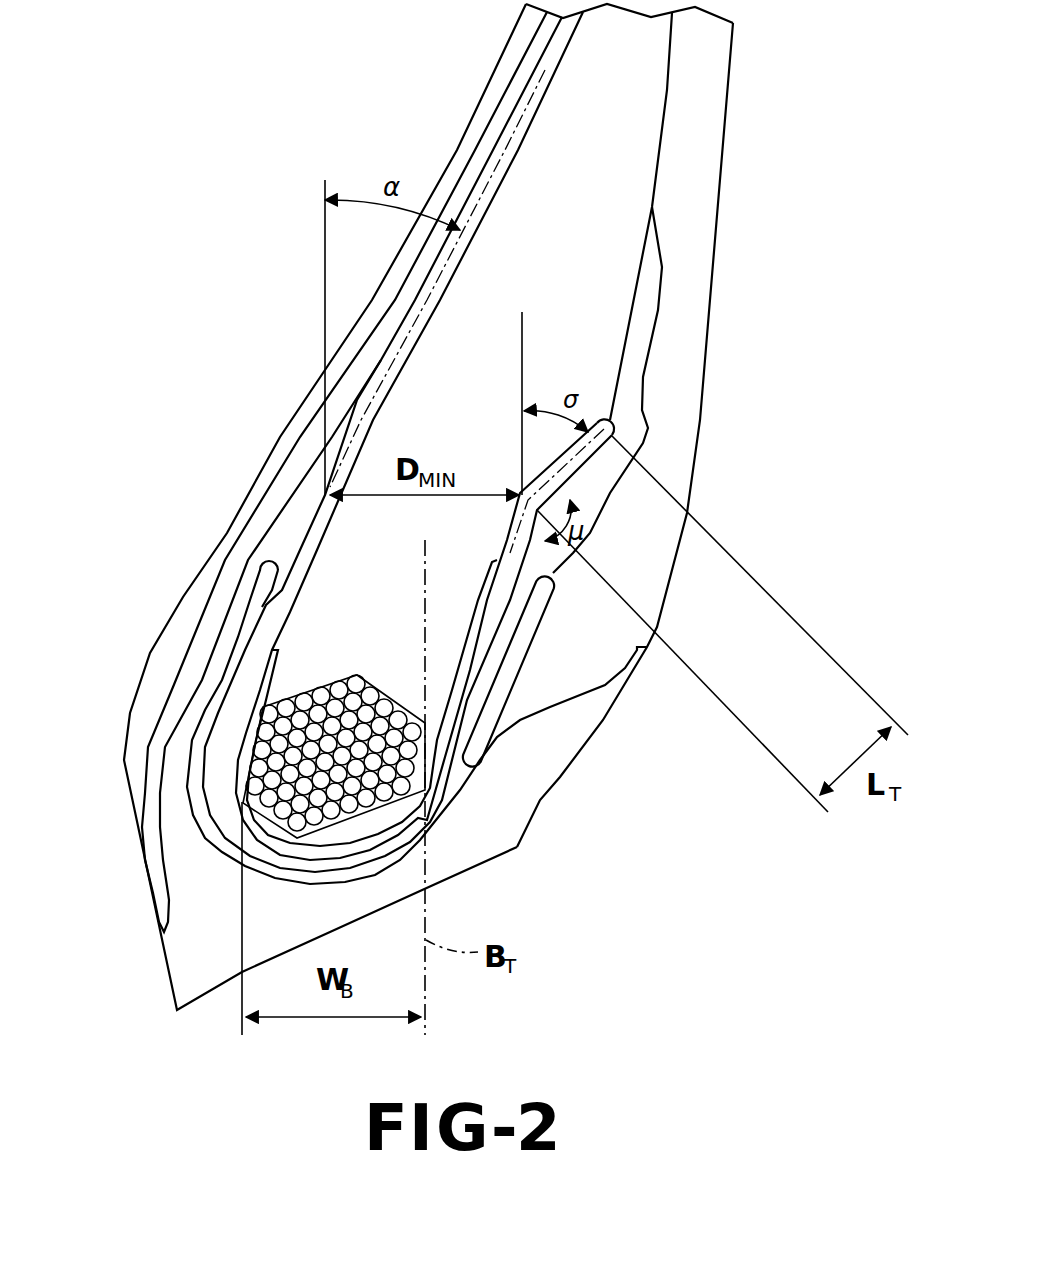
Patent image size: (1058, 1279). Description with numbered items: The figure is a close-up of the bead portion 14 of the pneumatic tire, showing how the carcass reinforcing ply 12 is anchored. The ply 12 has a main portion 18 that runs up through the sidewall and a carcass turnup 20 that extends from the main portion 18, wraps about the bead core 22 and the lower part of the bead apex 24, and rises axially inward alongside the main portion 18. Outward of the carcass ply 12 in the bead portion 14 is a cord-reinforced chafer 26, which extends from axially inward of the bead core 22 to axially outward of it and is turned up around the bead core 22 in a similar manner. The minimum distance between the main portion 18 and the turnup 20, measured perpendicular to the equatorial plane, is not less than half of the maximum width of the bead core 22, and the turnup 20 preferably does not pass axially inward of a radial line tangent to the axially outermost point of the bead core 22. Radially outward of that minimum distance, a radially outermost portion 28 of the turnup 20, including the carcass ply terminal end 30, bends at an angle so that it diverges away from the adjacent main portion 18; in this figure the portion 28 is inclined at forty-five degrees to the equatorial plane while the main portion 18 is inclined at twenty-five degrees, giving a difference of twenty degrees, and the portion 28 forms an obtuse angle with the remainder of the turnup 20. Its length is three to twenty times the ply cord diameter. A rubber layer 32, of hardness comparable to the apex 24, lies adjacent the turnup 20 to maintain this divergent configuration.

The carcass reinforcing ply 12 is at (543, 75).
The bead portion 14 is at (118, 572).
The main portion 18 is at (390, 360).
The carcass turnup 20 is at (470, 698).
The bead core 22 is at (247, 767).
The bead apex 24 is at (618, 123).
The chafer 26 is at (223, 680).
The radially outermost portion 28 is at (577, 459).
The carcass ply terminal end 30 is at (608, 433).
The rubber layer 32 is at (605, 491).